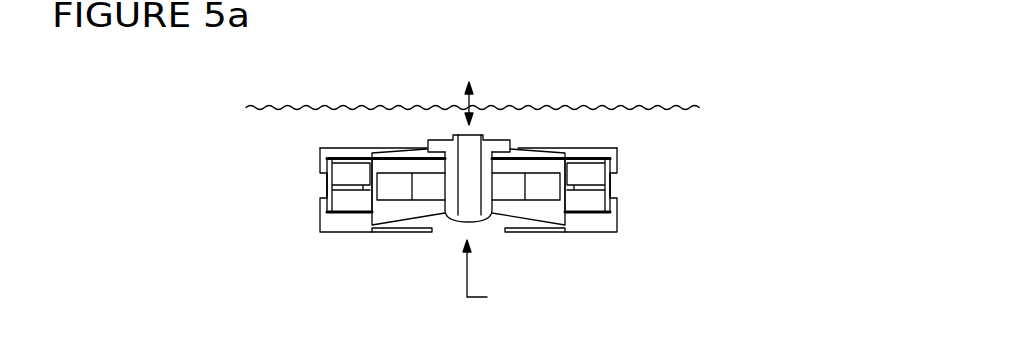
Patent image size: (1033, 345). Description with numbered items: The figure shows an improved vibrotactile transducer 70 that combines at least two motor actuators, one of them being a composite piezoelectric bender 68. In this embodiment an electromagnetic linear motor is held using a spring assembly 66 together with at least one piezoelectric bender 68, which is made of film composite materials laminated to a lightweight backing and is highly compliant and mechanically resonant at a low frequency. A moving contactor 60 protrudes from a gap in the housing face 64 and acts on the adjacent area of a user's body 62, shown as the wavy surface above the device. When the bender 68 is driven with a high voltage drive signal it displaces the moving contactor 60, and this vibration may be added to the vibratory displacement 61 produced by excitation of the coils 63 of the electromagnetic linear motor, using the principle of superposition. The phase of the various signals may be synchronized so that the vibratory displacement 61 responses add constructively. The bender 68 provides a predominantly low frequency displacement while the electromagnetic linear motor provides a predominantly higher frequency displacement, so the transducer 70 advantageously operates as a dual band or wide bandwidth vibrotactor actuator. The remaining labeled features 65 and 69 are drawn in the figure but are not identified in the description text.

The moving contactor 60 is at (515, 138).
The vibratory displacement 61 is at (476, 97).
The adjacent area of a users body 62 is at (340, 108).
The coils 63 is at (613, 167).
The housing face 64 is at (560, 144).
The housing latch notch 65 is at (627, 185).
The spring assembly 66 is at (390, 157).
The composite piezoelectric bender 68 is at (421, 222).
The direction of force 69 is at (495, 277).
The improved vibrotactile transducer 70 is at (387, 173).